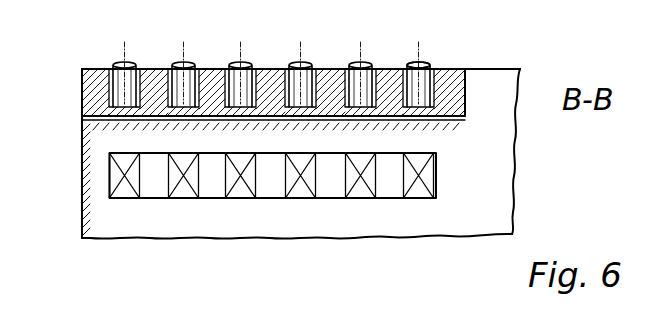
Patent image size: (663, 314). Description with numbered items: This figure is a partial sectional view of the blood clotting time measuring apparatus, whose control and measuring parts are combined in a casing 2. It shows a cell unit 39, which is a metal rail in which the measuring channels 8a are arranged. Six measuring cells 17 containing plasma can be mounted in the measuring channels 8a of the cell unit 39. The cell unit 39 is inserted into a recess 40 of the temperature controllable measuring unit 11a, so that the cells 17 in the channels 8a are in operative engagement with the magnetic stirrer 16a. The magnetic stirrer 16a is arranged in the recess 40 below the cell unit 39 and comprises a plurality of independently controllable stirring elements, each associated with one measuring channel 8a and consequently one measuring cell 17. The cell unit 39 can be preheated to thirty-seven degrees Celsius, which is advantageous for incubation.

The casing 2 is at (82, 177).
The cell unit 39 is at (87, 69).
The measuring cell 17 is at (434, 66).
The measuring channel 8a is at (437, 64).
The recess 40 is at (78, 116).
The temperature controllable measuring unit 11a is at (465, 120).
The magnetic stirrer 16a is at (212, 188).